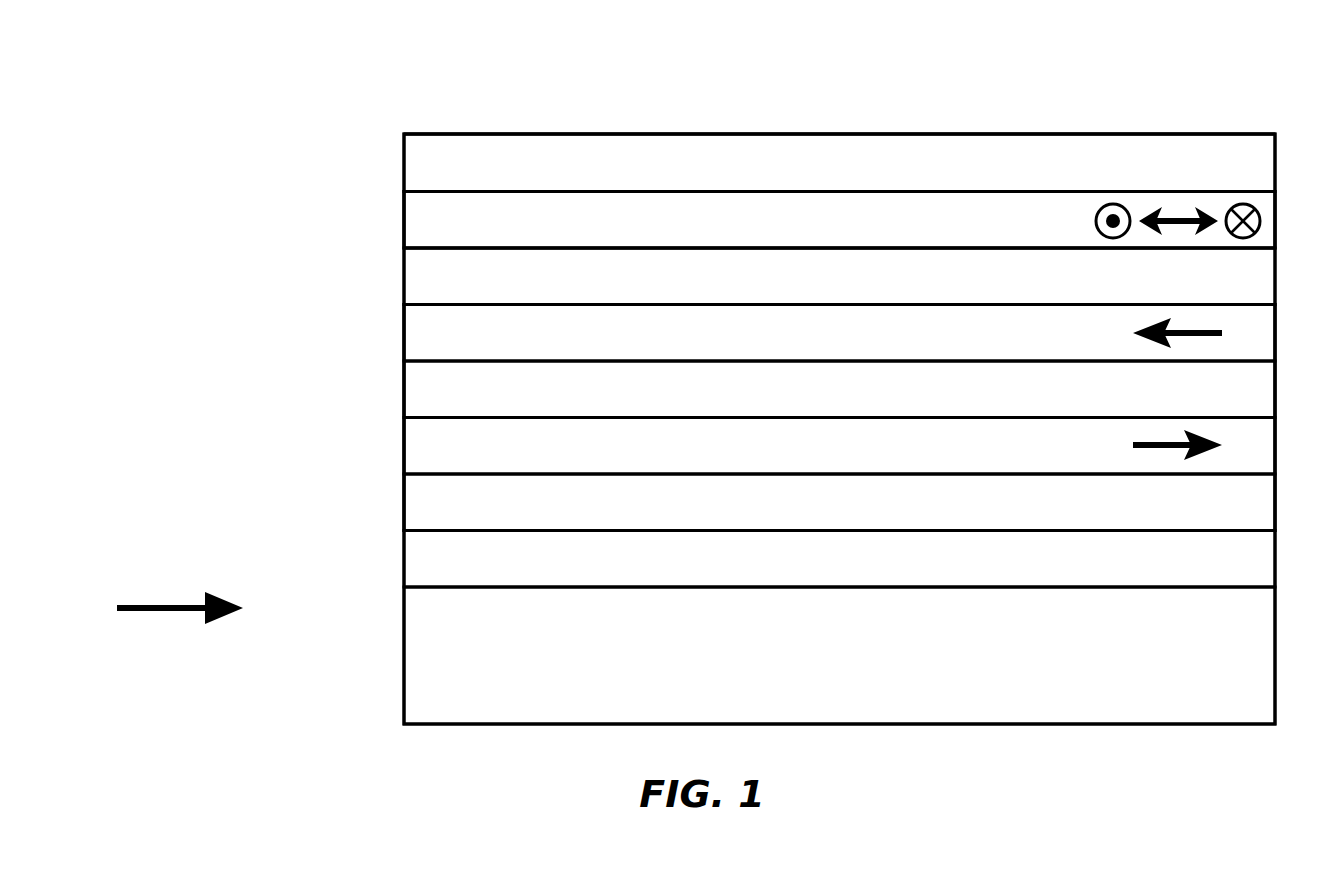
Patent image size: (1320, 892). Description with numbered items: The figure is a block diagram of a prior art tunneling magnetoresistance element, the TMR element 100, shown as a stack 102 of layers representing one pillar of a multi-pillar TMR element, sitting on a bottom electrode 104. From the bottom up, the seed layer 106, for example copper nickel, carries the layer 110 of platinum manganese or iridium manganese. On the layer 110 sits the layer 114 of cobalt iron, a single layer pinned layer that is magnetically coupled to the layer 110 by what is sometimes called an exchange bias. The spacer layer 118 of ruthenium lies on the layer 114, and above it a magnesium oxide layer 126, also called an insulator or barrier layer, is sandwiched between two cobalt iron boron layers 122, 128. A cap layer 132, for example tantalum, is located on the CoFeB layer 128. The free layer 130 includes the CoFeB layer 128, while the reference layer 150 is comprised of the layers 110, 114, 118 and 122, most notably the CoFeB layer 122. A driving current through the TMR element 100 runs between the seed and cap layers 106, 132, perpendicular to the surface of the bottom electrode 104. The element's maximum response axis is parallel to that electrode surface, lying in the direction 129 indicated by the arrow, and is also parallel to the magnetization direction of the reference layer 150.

The TMR element 100 is at (957, 112).
The stack 102 is at (1183, 135).
The bottom electrode 104 is at (470, 669).
The seed layer 106 is at (470, 571).
The layer 110 is at (470, 514).
The single layer pinned layer 114 is at (470, 458).
The spacer layer 118 is at (470, 401).
The CoFeB layer 122 is at (470, 345).
The MgO layer 126 is at (470, 289).
The CoFeB layer 128 is at (470, 232).
The direction 129 is at (160, 602).
The free layer 130 is at (407, 225).
The cap layer 132 is at (470, 176).
The reference layer 150 is at (367, 530).